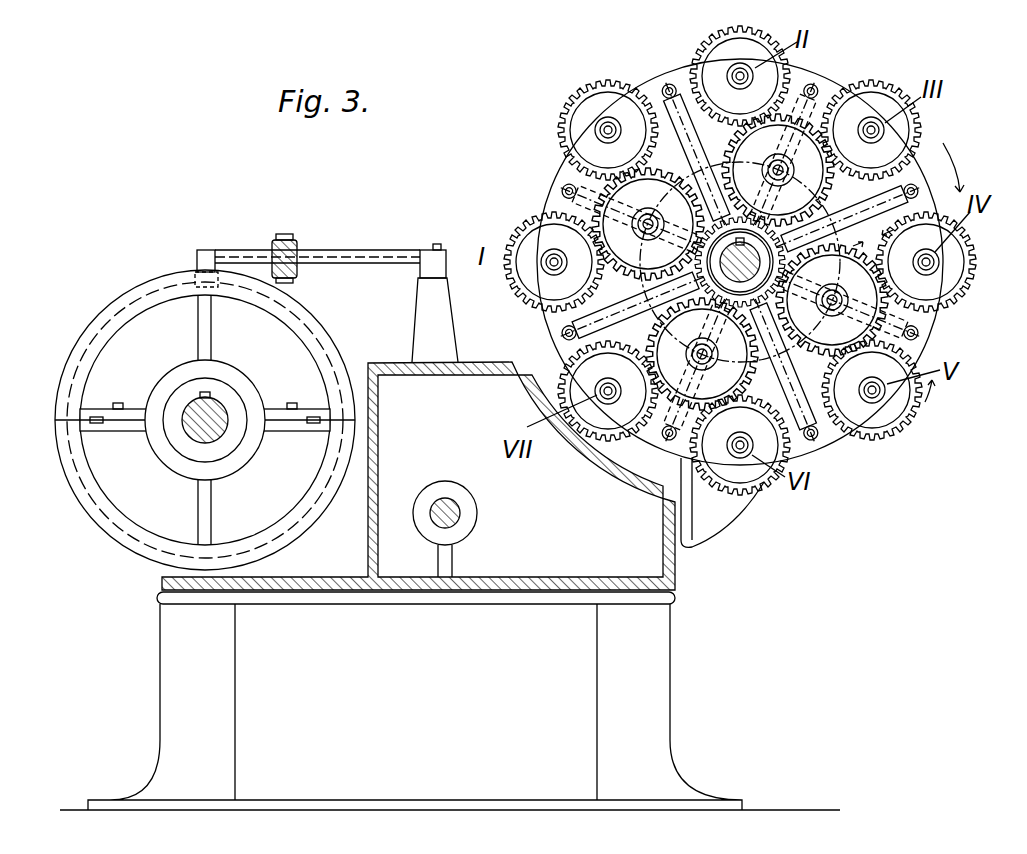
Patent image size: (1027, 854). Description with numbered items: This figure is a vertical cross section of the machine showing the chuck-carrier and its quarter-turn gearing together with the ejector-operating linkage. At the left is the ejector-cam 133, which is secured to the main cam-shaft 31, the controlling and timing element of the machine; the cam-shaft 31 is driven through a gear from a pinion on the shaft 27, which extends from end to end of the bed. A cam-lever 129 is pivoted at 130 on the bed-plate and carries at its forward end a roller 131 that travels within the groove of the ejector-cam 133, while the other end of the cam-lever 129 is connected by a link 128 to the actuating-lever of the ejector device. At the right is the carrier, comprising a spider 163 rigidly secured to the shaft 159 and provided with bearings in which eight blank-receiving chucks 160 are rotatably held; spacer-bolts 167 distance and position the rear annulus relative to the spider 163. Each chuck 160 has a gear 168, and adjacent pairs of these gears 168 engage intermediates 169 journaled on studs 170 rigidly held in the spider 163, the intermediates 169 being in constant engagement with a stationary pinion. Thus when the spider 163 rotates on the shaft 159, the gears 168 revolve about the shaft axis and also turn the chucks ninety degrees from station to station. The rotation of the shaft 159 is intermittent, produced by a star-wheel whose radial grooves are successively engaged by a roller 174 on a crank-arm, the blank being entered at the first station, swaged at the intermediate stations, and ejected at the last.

The shaft 27 is at (462, 516).
The main cam-shaft 31 is at (190, 430).
The link 128 is at (298, 265).
The cam-lever 129 is at (322, 258).
The pivot 130 is at (437, 244).
The roller 131 is at (195, 280).
The ejector-cam 133 is at (80, 348).
The shaft 159 is at (565, 306).
The chuck 160 is at (598, 125).
The spider 163 is at (654, 96).
The spacer-bolt 167 is at (561, 191).
The gear 168 is at (580, 392).
The intermediate 169 is at (597, 197).
The stud 170 is at (648, 240).
The roller 174 is at (834, 292).